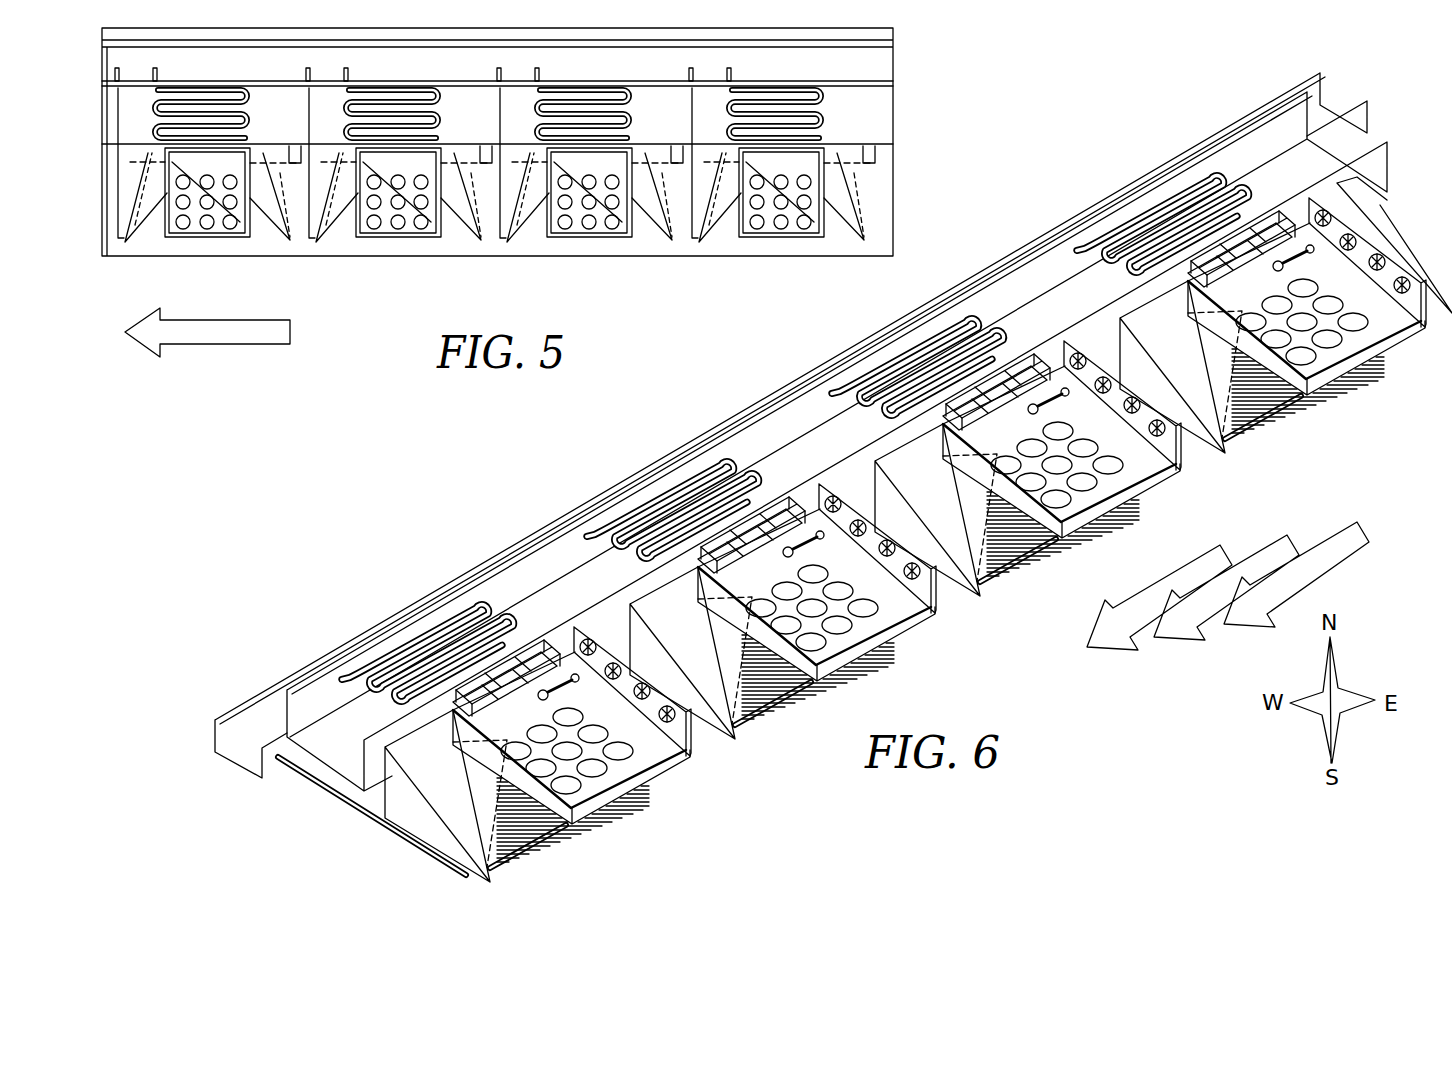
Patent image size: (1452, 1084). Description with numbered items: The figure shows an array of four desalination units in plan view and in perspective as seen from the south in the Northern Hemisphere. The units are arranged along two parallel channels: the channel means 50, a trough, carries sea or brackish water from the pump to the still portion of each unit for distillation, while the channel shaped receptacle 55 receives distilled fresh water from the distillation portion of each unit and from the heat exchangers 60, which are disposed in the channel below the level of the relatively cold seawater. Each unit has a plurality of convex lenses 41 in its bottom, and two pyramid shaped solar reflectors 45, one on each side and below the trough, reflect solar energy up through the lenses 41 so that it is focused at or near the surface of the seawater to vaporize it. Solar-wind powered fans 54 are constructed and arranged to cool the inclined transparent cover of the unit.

In FIG. 5, the convex lenses 41 is at (397, 227).
In FIG. 6, the convex lenses 41 is at (620, 753).
In FIG. 5, the pyramid shaped solar reflectors 45 is at (282, 207).
In FIG. 6, the pyramid shaped solar reflectors 45 is at (723, 683).
In FIG. 5, the channel means 50 is at (497, 153).
In FIG. 6, the channel means 50 is at (1323, 160).
In FIG. 6, the solar-wind powered fans 54 is at (1387, 247).
In FIG. 5, the channel shaped receptacle 55 is at (865, 72).
In FIG. 6, the channel shaped receptacle 55 is at (1322, 110).
In FIG. 5, the heat exchanger 60 is at (248, 118).
In FIG. 6, the heat exchanger 60 is at (437, 628).